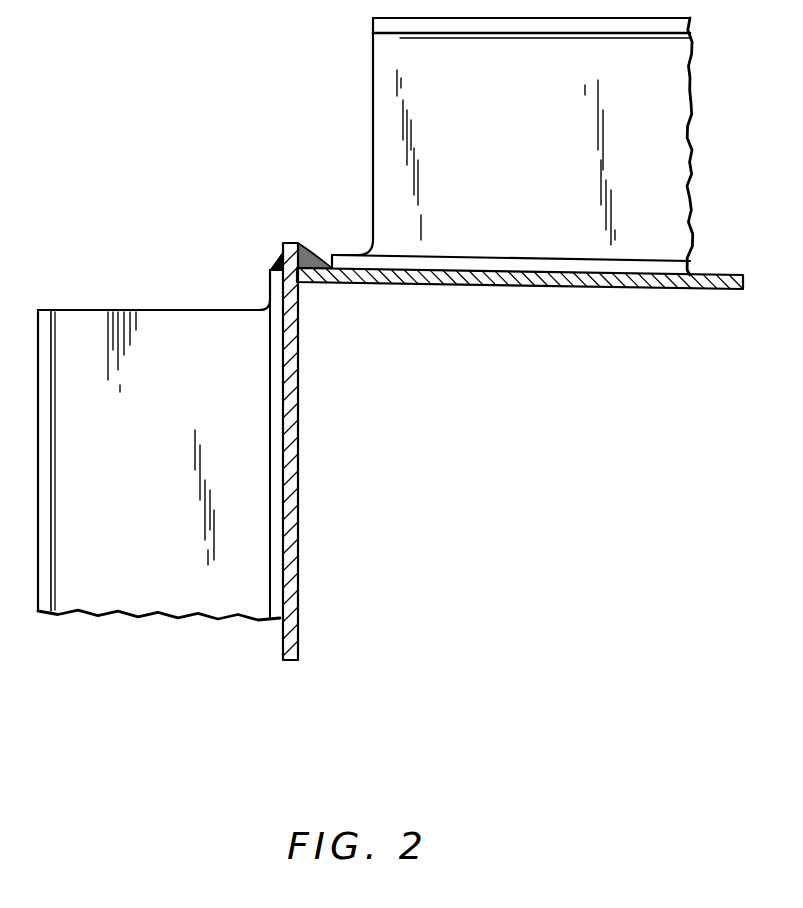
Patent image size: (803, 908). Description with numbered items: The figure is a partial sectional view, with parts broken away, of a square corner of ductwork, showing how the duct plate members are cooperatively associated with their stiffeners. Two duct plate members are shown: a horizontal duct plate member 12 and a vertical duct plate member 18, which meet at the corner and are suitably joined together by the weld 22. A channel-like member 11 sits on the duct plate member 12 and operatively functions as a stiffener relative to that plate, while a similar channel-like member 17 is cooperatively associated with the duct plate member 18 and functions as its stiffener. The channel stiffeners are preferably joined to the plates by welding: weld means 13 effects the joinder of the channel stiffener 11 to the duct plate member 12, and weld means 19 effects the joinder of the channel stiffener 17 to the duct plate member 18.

The channel-like member 11 is at (373, 130).
The duct plate member 12 is at (448, 285).
The weld means 13 is at (327, 262).
The channel-like member 17 is at (158, 310).
The duct plate member 18 is at (300, 378).
The weld means 19 is at (274, 263).
The weld 22 is at (310, 258).